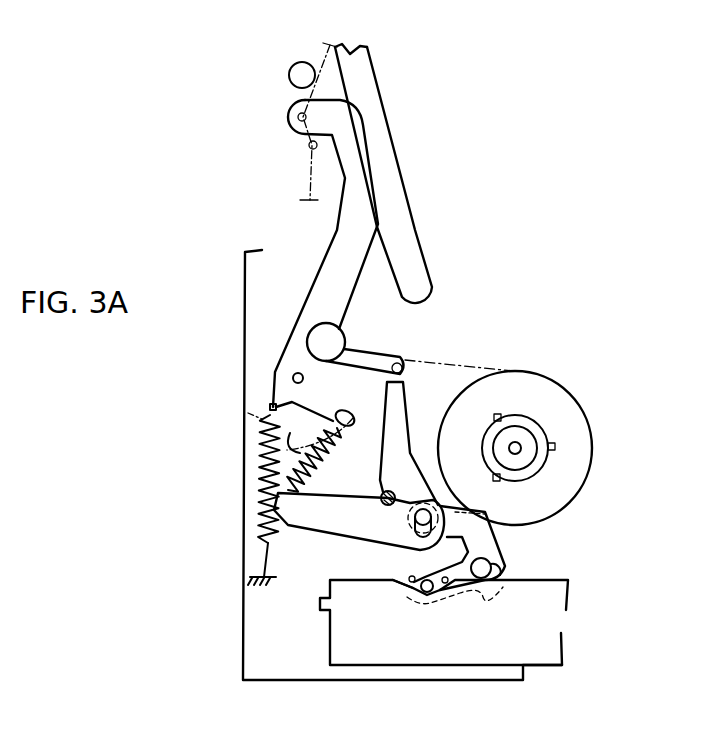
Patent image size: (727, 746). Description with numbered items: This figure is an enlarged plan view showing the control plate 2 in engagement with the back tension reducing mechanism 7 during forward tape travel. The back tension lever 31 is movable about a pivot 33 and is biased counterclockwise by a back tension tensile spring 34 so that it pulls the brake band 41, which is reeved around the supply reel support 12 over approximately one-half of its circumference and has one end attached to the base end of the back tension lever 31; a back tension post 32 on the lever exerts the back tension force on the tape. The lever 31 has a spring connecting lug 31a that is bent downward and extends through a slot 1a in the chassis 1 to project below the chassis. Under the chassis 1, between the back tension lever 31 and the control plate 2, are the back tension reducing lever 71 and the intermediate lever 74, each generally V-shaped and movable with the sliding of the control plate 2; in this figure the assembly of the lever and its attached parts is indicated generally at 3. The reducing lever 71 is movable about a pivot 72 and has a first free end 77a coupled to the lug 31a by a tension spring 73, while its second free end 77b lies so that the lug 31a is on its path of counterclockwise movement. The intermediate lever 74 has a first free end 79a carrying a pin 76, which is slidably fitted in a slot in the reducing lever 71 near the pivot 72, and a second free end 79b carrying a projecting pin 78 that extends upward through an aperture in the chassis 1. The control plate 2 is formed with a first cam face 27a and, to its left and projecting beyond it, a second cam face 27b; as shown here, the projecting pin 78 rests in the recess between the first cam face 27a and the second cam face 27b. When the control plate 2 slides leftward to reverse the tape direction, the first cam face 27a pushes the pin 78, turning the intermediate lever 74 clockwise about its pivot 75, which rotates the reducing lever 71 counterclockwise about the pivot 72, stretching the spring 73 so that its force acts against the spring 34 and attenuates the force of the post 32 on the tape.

The chassis 1 is at (263, 618).
The slot 1a is at (268, 408).
The control plate 2 is at (537, 652).
The lever assembly 3 is at (305, 258).
The back tension reducing mechanism 7 is at (588, 533).
The supply reel support 12 is at (572, 422).
The first cam face 27a is at (448, 593).
The second cam face 27b is at (405, 592).
The back tension lever 31 is at (335, 223).
The spring connecting lug 31a is at (347, 410).
The back tension post 32 is at (298, 118).
The pivot 33 is at (292, 378).
The back tension tensile spring 34 is at (280, 496).
The brake band 41 is at (457, 356).
The back tension reducing lever 71 is at (402, 434).
The pivot 72 is at (357, 491).
The tension spring 73 is at (268, 458).
The intermediate lever 74 is at (482, 548).
The pivot 75 is at (493, 567).
The pin 76 is at (413, 521).
The first free end 77a is at (314, 518).
The second free end 77b is at (405, 370).
The projecting pin 78 is at (426, 594).
The first free end 79a is at (468, 512).
The second free end 79b is at (410, 578).